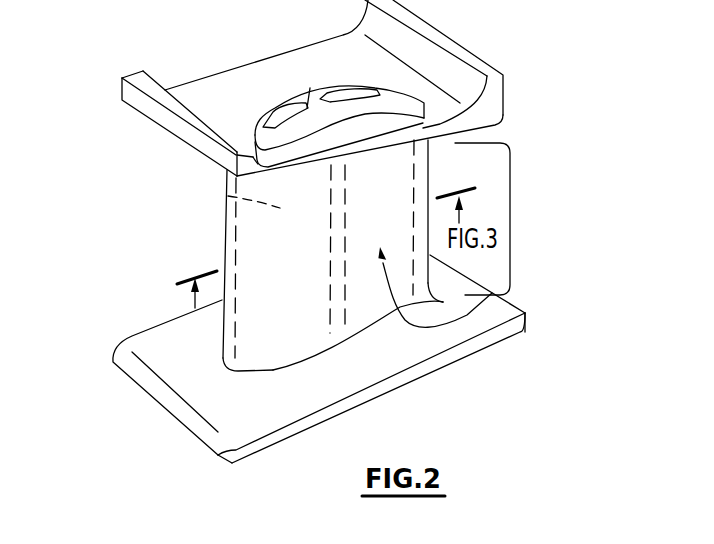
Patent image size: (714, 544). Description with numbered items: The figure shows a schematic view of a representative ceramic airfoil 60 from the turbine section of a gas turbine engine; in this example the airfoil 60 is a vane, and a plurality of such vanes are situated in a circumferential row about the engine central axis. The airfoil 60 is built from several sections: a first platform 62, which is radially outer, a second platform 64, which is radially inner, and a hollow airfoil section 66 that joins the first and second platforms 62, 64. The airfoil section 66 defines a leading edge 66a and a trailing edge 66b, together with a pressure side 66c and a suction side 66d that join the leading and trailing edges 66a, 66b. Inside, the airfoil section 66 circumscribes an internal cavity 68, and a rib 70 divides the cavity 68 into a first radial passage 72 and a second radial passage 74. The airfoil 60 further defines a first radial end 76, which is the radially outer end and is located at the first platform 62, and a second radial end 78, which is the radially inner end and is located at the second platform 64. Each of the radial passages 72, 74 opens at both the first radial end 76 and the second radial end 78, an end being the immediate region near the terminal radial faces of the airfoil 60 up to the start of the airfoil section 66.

The airfoil 60 is at (104, 275).
The first platform 62 is at (494, 108).
The second platform 64 is at (510, 335).
The airfoil section 66 is at (510, 217).
The leading edge 66a is at (227, 225).
The trailing edge 66b is at (432, 175).
The pressure side 66c is at (251, 228).
The suction side 66d is at (227, 197).
The internal cavity 68 is at (236, 319).
The rib 70 is at (308, 100).
The first radial passage 72 is at (307, 283).
The second radial passage 74 is at (505, 294).
The first radial end 76 is at (250, 88).
The second radial end 78 is at (282, 443).